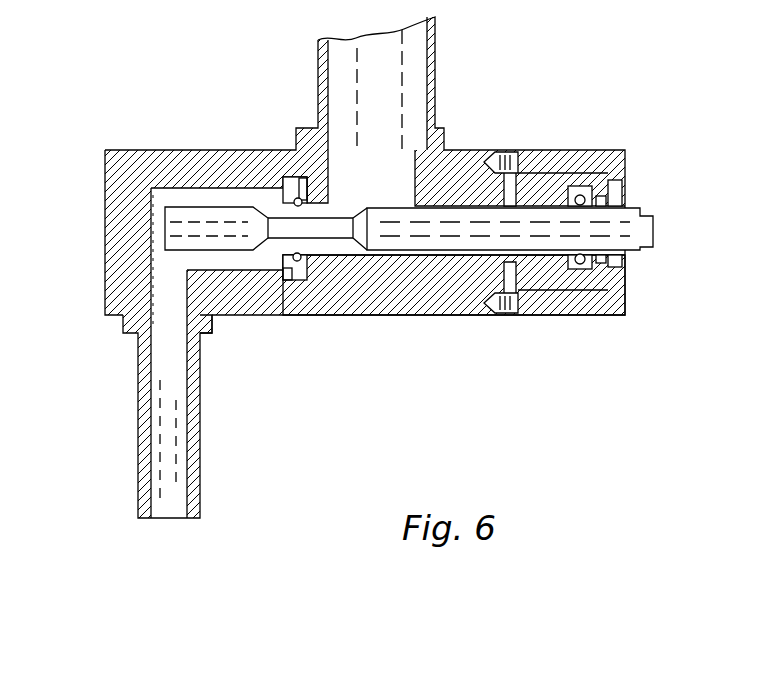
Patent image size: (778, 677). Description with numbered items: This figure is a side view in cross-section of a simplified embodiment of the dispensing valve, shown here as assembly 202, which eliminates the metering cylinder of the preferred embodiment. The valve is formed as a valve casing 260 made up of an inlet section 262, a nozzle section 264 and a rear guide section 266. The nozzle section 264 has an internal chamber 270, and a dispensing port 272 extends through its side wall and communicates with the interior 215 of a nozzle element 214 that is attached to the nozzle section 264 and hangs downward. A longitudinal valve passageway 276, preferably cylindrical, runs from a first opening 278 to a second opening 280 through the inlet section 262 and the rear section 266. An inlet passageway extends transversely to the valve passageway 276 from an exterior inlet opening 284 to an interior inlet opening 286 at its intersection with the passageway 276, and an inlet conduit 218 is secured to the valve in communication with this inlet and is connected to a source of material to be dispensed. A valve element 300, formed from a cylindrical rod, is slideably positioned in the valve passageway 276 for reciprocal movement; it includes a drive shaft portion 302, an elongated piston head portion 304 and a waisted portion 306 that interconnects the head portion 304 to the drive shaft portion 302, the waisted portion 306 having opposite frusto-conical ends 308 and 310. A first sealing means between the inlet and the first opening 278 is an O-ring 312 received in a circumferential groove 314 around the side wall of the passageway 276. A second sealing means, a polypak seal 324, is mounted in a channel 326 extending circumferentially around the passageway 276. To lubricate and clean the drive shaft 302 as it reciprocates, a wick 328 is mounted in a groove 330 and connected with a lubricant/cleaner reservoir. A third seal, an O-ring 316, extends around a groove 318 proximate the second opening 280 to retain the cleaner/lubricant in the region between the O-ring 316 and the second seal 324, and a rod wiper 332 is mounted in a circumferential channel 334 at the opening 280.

The valve assembly 202 is at (392, 197).
The nozzle element 214 is at (200, 460).
The interior of nozzle element 215 is at (172, 402).
The inlet conduit 218 is at (436, 50).
The valve casing 260 is at (455, 315).
The inlet section 262 is at (452, 300).
The nozzle section 264 is at (215, 315).
The rear guide section 266 is at (566, 205).
The internal chamber 270 is at (150, 231).
The dispensing port 272 is at (168, 293).
The longitudinal valve passageway 276 is at (337, 250).
The first opening 278 is at (206, 222).
The second opening 280 is at (633, 252).
The exterior inlet opening 284 is at (375, 160).
The interior inlet opening 286 is at (401, 196).
The valve element 300 is at (655, 212).
The drive shaft portion 302 is at (558, 247).
The elongated piston head portion 304 is at (195, 152).
The waisted portion 306 is at (303, 200).
The frusto conical end 308 is at (292, 262).
The frusto conical end 310 is at (362, 232).
The O-ring 312 is at (313, 258).
The circumferential groove 314 is at (270, 185).
The O-ring 316 is at (645, 207).
The groove 318 is at (613, 262).
The polypak seal 324 is at (552, 206).
The channel 326 is at (548, 262).
The wick 328 is at (590, 200).
The groove 330 is at (601, 200).
The rod wiper 332 is at (652, 235).
The circumferential channel 334 is at (613, 204).